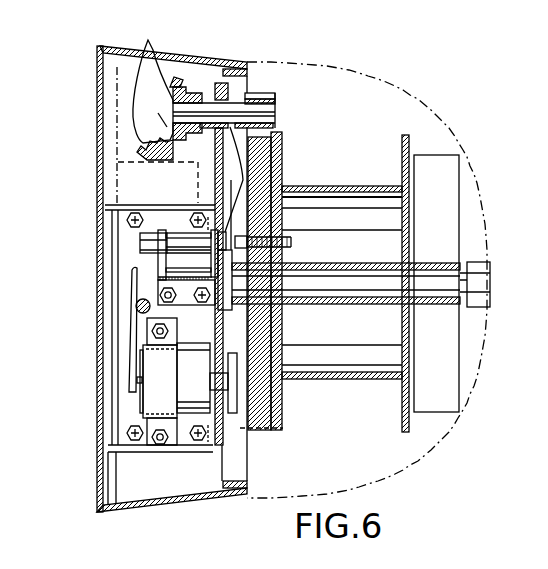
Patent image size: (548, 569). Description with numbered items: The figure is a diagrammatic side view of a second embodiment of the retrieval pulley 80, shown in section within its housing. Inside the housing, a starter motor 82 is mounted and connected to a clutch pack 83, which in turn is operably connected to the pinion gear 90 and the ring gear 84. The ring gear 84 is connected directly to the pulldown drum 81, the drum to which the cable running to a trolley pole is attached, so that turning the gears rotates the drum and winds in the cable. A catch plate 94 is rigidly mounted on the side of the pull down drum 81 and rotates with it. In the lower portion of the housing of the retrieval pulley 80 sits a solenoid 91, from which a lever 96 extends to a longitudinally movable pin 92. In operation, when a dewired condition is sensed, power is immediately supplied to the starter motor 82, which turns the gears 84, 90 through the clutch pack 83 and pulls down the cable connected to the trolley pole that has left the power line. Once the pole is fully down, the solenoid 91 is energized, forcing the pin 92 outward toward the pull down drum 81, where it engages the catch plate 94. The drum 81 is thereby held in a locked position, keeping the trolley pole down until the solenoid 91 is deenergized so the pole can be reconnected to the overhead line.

The retrieval pulley 80 is at (82, 98).
The pulldown drum 81 is at (362, 186).
The starter motor 82 is at (123, 230).
The clutch pack 83 is at (117, 172).
The ring gear 84 is at (150, 47).
The pinion gear 90 is at (275, 100).
The solenoid 91 is at (140, 402).
The longitudinally movable pin 92 is at (147, 253).
The catch plate 94 is at (230, 123).
The lever 96 is at (128, 357).